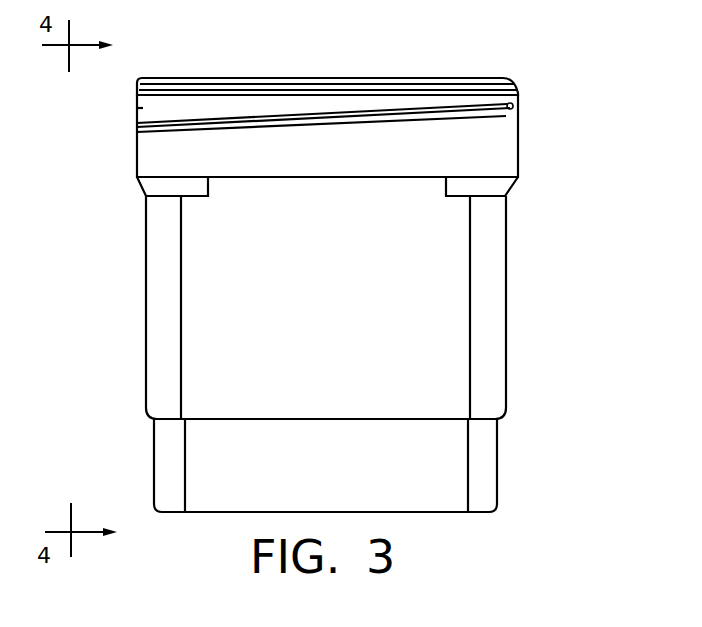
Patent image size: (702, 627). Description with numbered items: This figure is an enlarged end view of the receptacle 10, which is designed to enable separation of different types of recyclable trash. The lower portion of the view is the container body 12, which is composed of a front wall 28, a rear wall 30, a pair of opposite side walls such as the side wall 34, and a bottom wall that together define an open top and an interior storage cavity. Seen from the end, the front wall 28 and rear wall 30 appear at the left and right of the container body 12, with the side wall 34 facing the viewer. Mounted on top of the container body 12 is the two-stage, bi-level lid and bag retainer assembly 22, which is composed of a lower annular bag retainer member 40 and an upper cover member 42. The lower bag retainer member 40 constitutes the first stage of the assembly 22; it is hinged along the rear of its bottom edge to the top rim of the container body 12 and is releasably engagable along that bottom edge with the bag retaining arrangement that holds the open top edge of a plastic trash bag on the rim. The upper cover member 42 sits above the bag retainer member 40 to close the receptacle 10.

The receptacle 10 is at (534, 73).
The container body 12 is at (526, 270).
The two-stage, bi-level lid and bag retainer assembly 22 is at (550, 113).
The front wall 28 is at (146, 368).
The rear wall 30 is at (507, 338).
The side wall 34 is at (448, 460).
The lower annular bag retainer member 40 is at (510, 148).
The upper cover member 42 is at (137, 110).